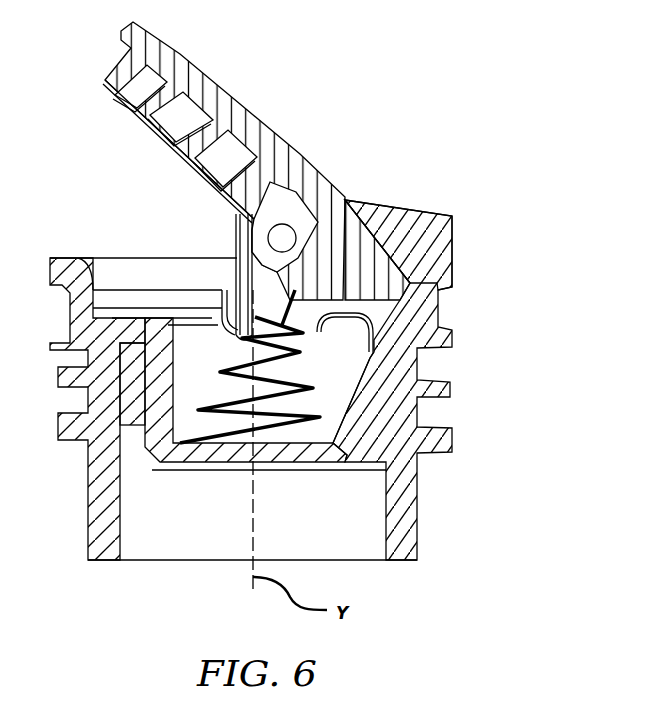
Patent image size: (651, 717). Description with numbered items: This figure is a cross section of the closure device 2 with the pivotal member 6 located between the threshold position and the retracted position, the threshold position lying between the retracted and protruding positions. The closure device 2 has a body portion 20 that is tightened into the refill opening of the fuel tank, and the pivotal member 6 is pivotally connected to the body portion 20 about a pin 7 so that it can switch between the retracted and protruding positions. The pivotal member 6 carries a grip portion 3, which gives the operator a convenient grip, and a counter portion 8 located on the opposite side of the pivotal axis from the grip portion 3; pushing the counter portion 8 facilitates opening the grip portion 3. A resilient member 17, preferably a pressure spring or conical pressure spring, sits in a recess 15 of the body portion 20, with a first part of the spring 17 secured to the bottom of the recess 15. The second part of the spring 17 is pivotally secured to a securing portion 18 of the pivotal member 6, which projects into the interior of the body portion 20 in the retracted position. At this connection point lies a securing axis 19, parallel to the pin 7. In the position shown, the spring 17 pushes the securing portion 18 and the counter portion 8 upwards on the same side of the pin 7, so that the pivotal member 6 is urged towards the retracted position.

The closure device 2 is at (460, 576).
The grip portion 3 is at (236, 93).
The pivotal member 6 is at (235, 205).
The pin 7 is at (283, 232).
The counter portion 8 is at (350, 203).
The recess 15 is at (345, 372).
The resilient member 17 is at (372, 394).
The securing portion 18 is at (405, 214).
The securing axis 19 is at (298, 283).
The body portion 20 is at (417, 477).